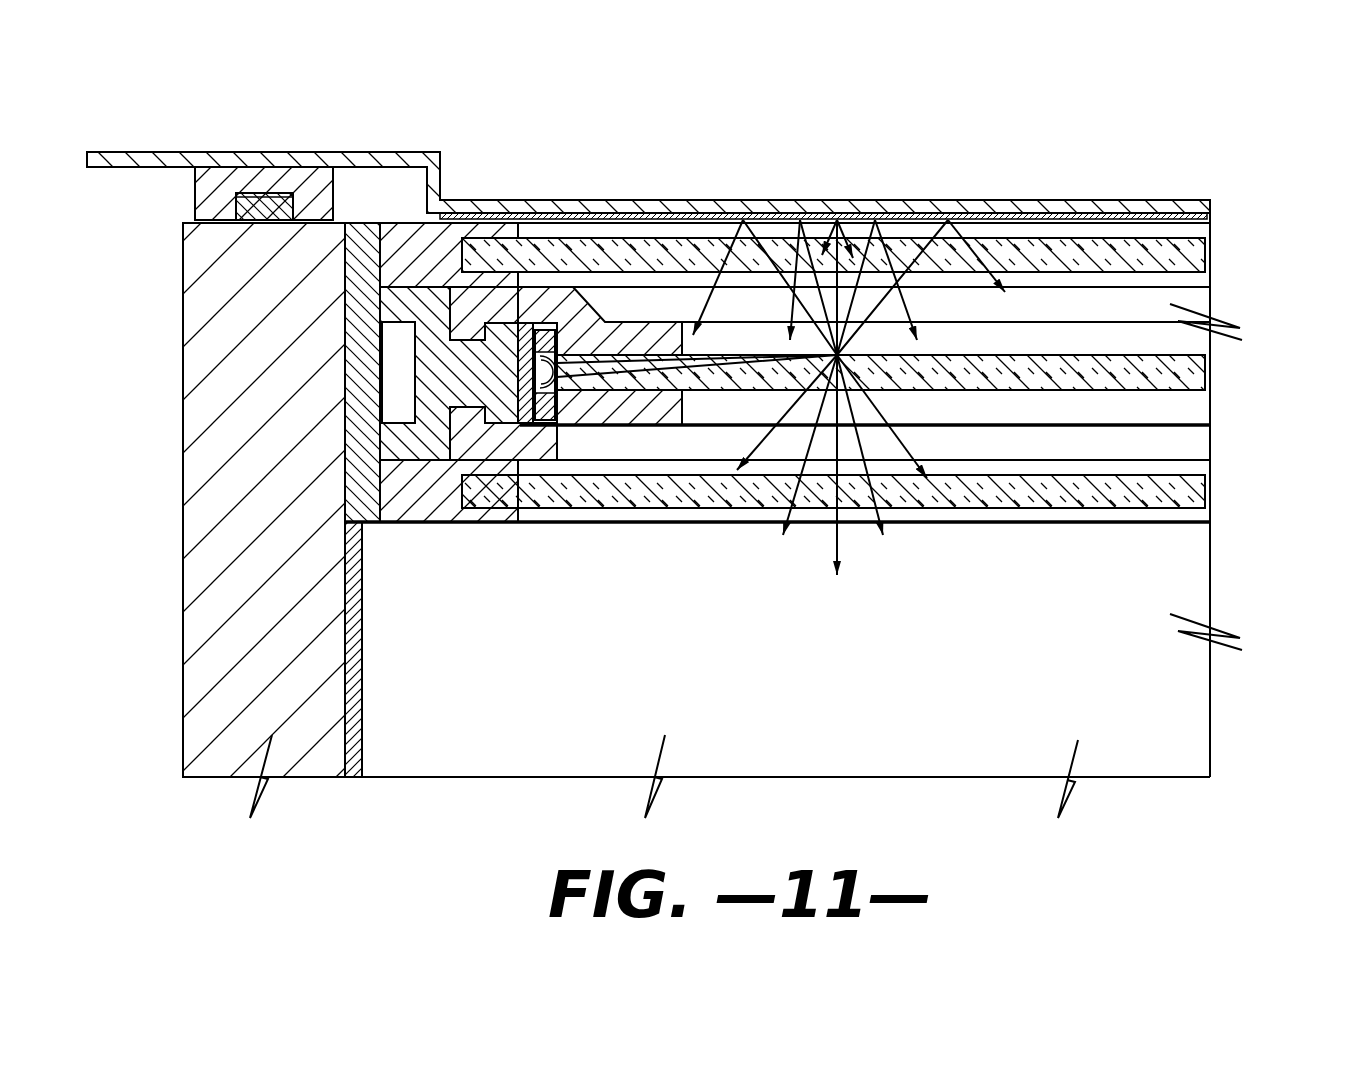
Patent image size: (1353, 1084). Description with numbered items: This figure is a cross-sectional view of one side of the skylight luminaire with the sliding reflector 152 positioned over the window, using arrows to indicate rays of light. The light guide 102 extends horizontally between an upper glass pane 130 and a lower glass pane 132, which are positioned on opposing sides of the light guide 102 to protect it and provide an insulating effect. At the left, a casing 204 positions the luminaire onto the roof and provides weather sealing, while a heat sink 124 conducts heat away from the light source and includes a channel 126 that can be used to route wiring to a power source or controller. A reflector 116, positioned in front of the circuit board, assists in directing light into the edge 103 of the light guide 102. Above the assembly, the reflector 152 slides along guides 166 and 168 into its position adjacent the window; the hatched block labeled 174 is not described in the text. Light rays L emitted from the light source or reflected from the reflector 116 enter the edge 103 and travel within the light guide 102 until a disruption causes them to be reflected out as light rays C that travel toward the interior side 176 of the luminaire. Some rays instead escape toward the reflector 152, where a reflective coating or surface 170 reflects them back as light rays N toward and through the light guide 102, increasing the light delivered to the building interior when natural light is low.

The light guide 102 is at (1197, 375).
The edge of light guide 103 is at (562, 397).
The reflector 116 is at (541, 403).
The heat sink 124 is at (367, 525).
The channel 126 is at (397, 363).
The glass pane 130 is at (1197, 263).
The glass pane 132 is at (1197, 497).
The reflector 152 is at (433, 181).
The guide 166 is at (310, 192).
The guide 168 is at (240, 197).
The reflective coating or surface 170 is at (770, 214).
The upper bracket block 174 is at (399, 219).
The interior side 176 is at (440, 530).
The casing 204 is at (200, 610).
The light rays L is at (640, 333).
The light rays N is at (728, 250).
The light rays C is at (907, 443).